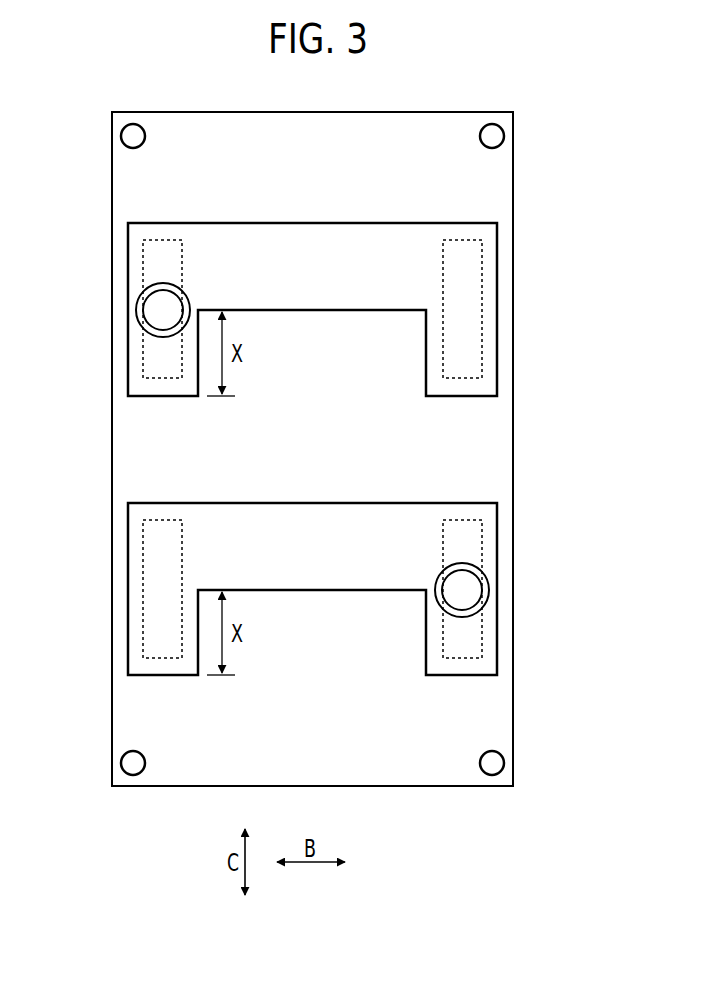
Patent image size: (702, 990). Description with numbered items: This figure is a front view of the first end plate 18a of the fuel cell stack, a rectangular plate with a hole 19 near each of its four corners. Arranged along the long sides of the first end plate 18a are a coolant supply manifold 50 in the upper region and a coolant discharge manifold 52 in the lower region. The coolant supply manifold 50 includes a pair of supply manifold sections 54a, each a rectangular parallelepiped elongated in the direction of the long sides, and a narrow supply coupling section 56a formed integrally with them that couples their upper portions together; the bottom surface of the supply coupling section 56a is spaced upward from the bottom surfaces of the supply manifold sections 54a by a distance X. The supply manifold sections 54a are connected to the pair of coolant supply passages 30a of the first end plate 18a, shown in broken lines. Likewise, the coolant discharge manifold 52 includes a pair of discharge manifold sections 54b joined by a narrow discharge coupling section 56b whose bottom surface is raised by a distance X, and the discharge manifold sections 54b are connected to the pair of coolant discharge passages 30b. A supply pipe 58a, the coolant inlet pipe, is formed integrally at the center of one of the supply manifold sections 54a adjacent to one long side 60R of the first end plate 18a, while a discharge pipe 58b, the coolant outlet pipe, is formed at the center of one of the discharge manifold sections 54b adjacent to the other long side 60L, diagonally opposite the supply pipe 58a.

The first end plate 18a is at (452, 112).
The mounting hole 19 is at (127, 135).
The coolant supply manifold 50 is at (417, 223).
The coolant discharge manifold 52 is at (417, 503).
The supply manifold sections 54a is at (133, 389).
The discharge manifold sections 54b is at (133, 669).
The supply coupling section 56a is at (318, 255).
The discharge coupling section 56b is at (318, 535).
The supply pipe 58a is at (137, 310).
The discharge pipe 58b is at (483, 592).
The coolant supply passages 30a is at (150, 258).
The coolant discharge passages 30b is at (150, 572).
The one long side 60R is at (112, 430).
The other long side 60L is at (513, 430).